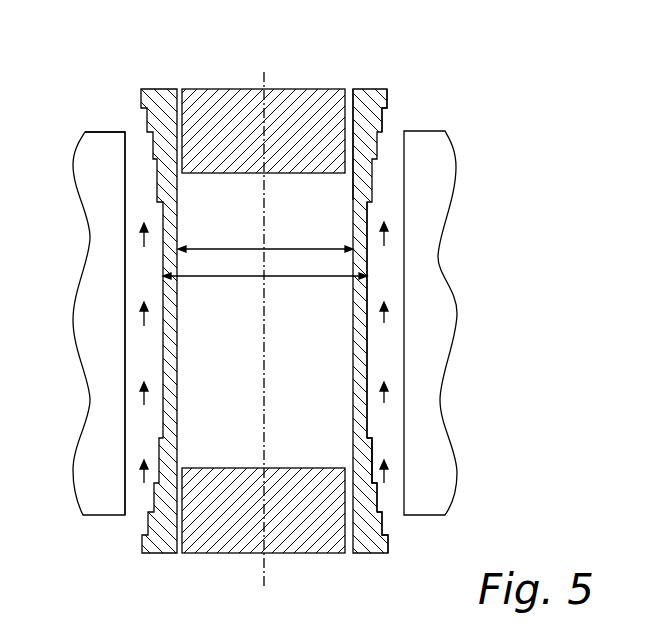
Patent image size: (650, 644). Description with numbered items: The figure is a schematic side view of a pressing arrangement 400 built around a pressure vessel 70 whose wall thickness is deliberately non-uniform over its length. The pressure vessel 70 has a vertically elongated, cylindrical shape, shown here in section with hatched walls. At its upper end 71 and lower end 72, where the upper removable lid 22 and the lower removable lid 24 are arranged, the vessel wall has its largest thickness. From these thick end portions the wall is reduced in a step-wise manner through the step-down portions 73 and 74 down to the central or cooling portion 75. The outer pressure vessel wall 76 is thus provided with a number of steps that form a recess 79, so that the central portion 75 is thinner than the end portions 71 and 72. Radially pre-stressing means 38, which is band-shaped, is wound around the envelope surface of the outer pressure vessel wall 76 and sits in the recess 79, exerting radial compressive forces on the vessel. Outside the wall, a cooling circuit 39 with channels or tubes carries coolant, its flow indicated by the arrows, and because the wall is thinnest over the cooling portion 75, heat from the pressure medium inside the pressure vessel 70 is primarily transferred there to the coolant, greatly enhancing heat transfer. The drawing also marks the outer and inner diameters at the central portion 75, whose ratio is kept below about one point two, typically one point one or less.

The pressing arrangement 400 is at (293, 56).
The upper removable lid 22 is at (232, 89).
The lower removable lid 24 is at (245, 553).
The pressure vessel 70 is at (363, 88).
The upper end 71 is at (373, 99).
The lower end 72 is at (372, 546).
The step-down portion 73 is at (358, 138).
The step-down portion 74 is at (375, 453).
The central or cooling portion 75 is at (365, 325).
The outer pressure vessel wall 76 is at (365, 255).
The recess 79 is at (371, 421).
The radially pre-stressing means 38 is at (88, 405).
The cooling circuit 39 is at (137, 283).